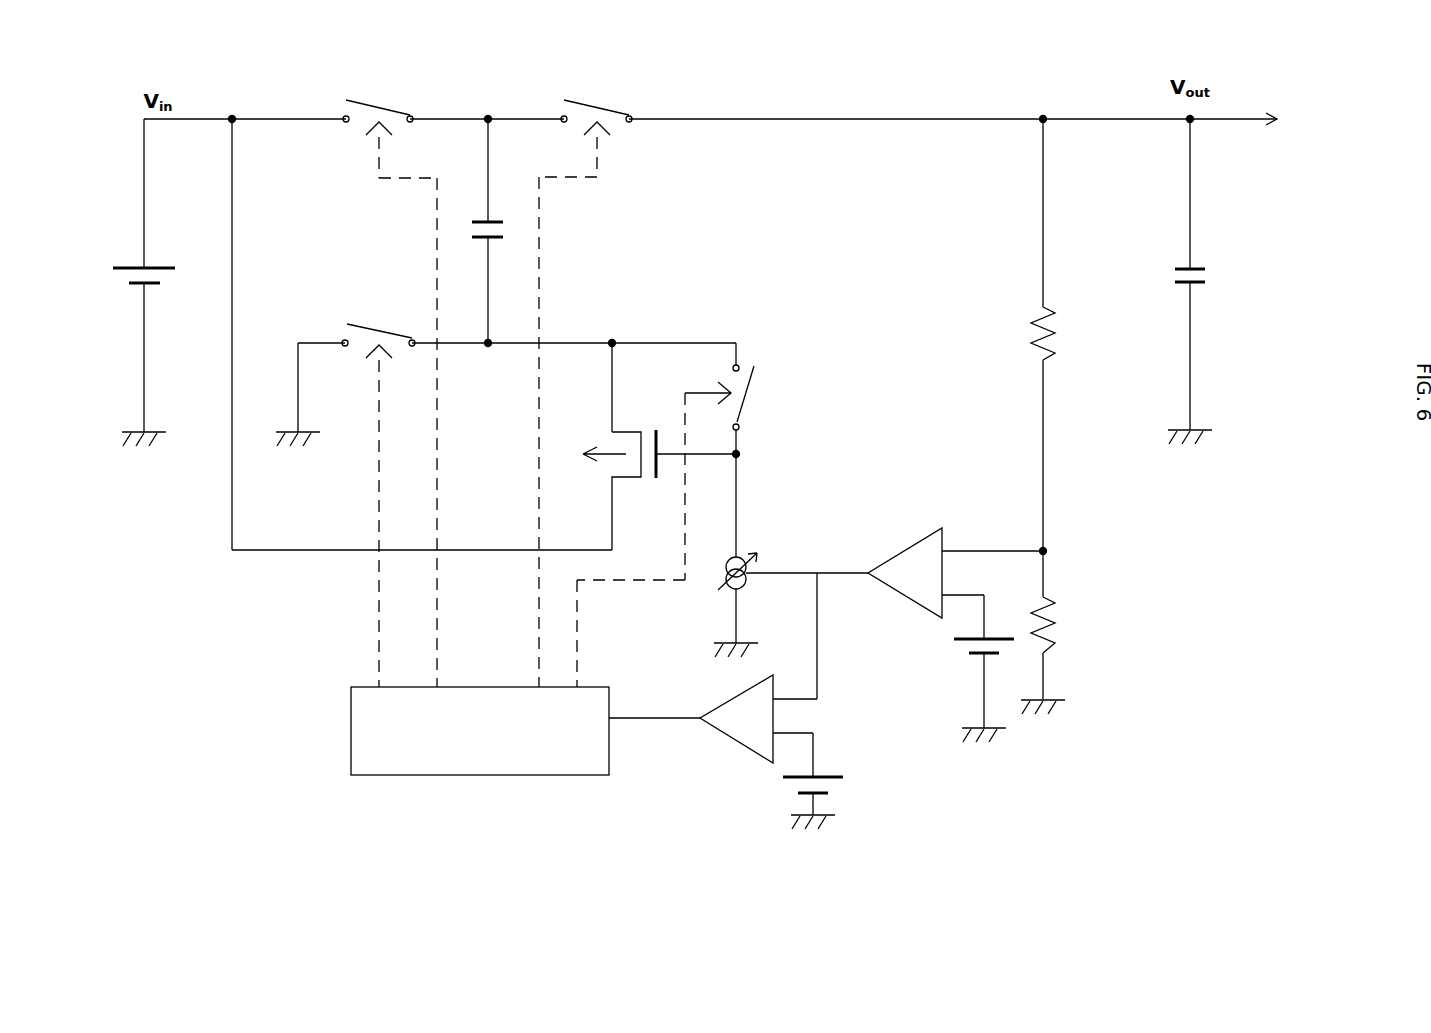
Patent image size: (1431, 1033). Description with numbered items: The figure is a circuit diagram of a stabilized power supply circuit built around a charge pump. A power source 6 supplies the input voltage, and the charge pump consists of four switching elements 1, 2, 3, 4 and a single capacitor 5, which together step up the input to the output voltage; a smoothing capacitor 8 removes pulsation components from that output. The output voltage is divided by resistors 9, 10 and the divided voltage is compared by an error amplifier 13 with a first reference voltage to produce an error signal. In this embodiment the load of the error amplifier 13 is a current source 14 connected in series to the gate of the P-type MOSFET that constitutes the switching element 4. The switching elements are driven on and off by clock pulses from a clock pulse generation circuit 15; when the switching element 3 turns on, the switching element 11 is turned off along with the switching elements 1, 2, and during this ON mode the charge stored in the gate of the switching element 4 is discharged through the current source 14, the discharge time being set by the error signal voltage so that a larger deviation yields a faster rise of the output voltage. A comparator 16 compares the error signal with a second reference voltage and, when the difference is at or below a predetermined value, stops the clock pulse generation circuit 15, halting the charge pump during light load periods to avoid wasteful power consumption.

The switching element 1 is at (378, 100).
The switching element 2 is at (381, 328).
The switching element 3 is at (593, 100).
The switching element 4 is at (612, 439).
The capacitor 5 is at (494, 220).
The power source 6 is at (129, 279).
The smoothing capacitor 8 is at (1198, 266).
The resistor 9 is at (1032, 322).
The resistor 10 is at (1053, 602).
The switching element 11 is at (755, 372).
The error amplifier 13 is at (906, 596).
The current source 14 is at (732, 582).
The clock pulse generation circuit 15 is at (458, 776).
The comparator 16 is at (733, 740).